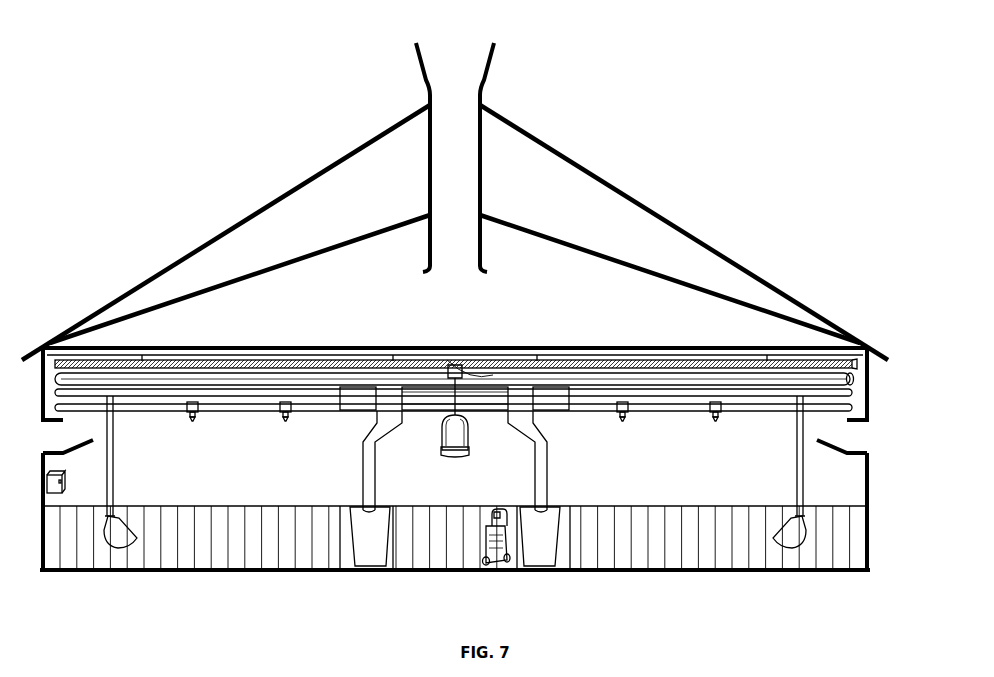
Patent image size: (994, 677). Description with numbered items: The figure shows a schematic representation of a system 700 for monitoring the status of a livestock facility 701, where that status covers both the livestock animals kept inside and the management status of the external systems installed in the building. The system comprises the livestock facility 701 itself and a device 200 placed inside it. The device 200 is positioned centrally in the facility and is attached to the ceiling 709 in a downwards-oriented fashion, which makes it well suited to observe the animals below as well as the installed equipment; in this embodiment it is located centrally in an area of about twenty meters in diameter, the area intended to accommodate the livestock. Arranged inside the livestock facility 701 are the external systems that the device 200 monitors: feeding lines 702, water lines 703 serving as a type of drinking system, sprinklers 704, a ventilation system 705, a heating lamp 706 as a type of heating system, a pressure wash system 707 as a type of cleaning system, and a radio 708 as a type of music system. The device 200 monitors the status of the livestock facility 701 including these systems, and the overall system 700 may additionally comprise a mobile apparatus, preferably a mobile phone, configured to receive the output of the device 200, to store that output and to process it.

The system 700 is at (329, 93).
The livestock facility 701 is at (340, 160).
The ventilation system 705 is at (457, 213).
The ceiling 709 is at (413, 347).
The heating lamp 706 is at (759, 363).
The sprinklers 704 is at (715, 402).
The water lines 703 is at (800, 396).
The feeding lines 702 is at (518, 420).
The device 200 is at (454, 424).
The radio 708 is at (57, 472).
The pressure wash system 707 is at (490, 550).